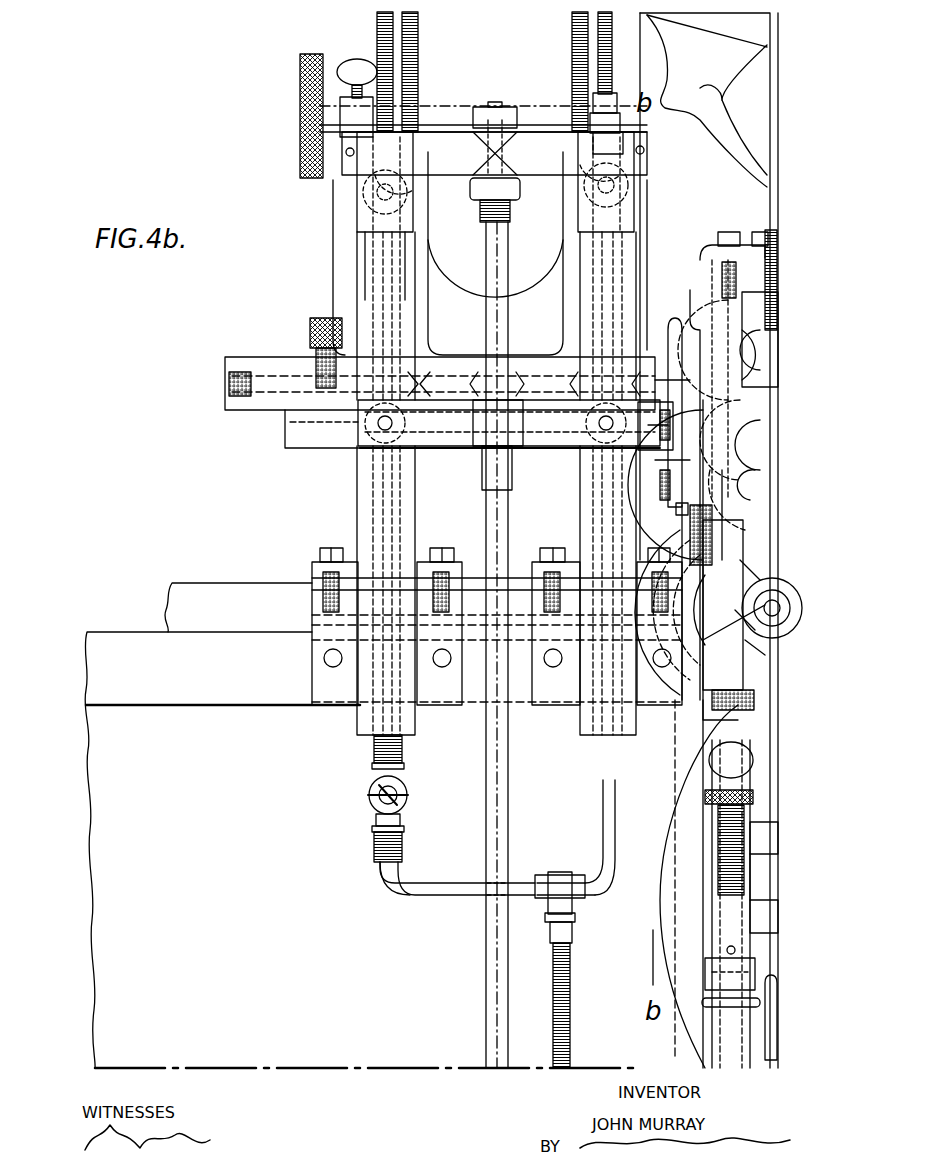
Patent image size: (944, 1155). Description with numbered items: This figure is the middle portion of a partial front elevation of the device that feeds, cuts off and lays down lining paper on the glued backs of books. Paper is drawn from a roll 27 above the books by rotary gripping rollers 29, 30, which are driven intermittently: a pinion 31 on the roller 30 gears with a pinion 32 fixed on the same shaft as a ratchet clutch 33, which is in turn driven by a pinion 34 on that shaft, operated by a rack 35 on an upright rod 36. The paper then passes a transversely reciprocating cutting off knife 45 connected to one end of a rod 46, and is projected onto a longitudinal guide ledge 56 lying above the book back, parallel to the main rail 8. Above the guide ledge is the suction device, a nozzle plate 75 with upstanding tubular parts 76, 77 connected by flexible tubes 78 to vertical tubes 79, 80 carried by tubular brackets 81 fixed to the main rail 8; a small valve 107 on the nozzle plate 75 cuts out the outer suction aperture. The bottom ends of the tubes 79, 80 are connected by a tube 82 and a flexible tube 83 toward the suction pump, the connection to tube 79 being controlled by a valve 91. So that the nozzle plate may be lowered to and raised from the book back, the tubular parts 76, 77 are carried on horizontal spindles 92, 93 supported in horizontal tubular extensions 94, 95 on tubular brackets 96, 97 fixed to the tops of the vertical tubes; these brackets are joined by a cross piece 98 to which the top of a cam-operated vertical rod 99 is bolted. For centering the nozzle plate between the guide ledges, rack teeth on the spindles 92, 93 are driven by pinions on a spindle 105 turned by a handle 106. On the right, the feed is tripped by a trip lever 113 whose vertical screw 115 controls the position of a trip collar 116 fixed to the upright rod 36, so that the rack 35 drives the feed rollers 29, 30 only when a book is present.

The main rail 8 is at (362, 825).
The roll 27 is at (700, 90).
The rotary gripping roller 29 is at (752, 318).
The rotary gripping roller 30 is at (755, 415).
The pinion 31 is at (752, 470).
The pinion 32 is at (702, 510).
The ratchet clutch 33 is at (728, 575).
The pinion 34 is at (760, 635).
The rack 35 is at (712, 680).
The upright rod 36 is at (735, 705).
The cutting off knife 45 is at (682, 410).
The rod 46 is at (656, 516).
The guide ledge 56 is at (292, 440).
The nozzle plate 75 is at (280, 366).
The upstanding tubular part 76 is at (368, 278).
The upstanding tubular part 77 is at (580, 303).
The flexible tube 78 is at (385, 28).
The vertical tube 79 is at (385, 247).
The vertical tube 80 is at (605, 245).
The tubular bracket 81 is at (382, 483).
The tube 82 is at (607, 824).
The flexible tube 83 is at (560, 965).
The valve 91 is at (405, 790).
The horizontal spindle 92 is at (385, 183).
The horizontal spindle 93 is at (614, 180).
The horizontal tubular extension 94 is at (365, 195).
The horizontal tubular extension 95 is at (618, 152).
The tubular bracket 96 is at (372, 218).
The tubular bracket 97 is at (592, 224).
The cross piece 98 is at (494, 153).
The vertical rod 99 is at (490, 247).
The spindle 105 is at (462, 116).
The handle 106 is at (303, 78).
The small valve 107 is at (322, 330).
The trip lever 113 is at (768, 918).
The vertical screw 115 is at (723, 873).
The trip collar 116 is at (722, 972).